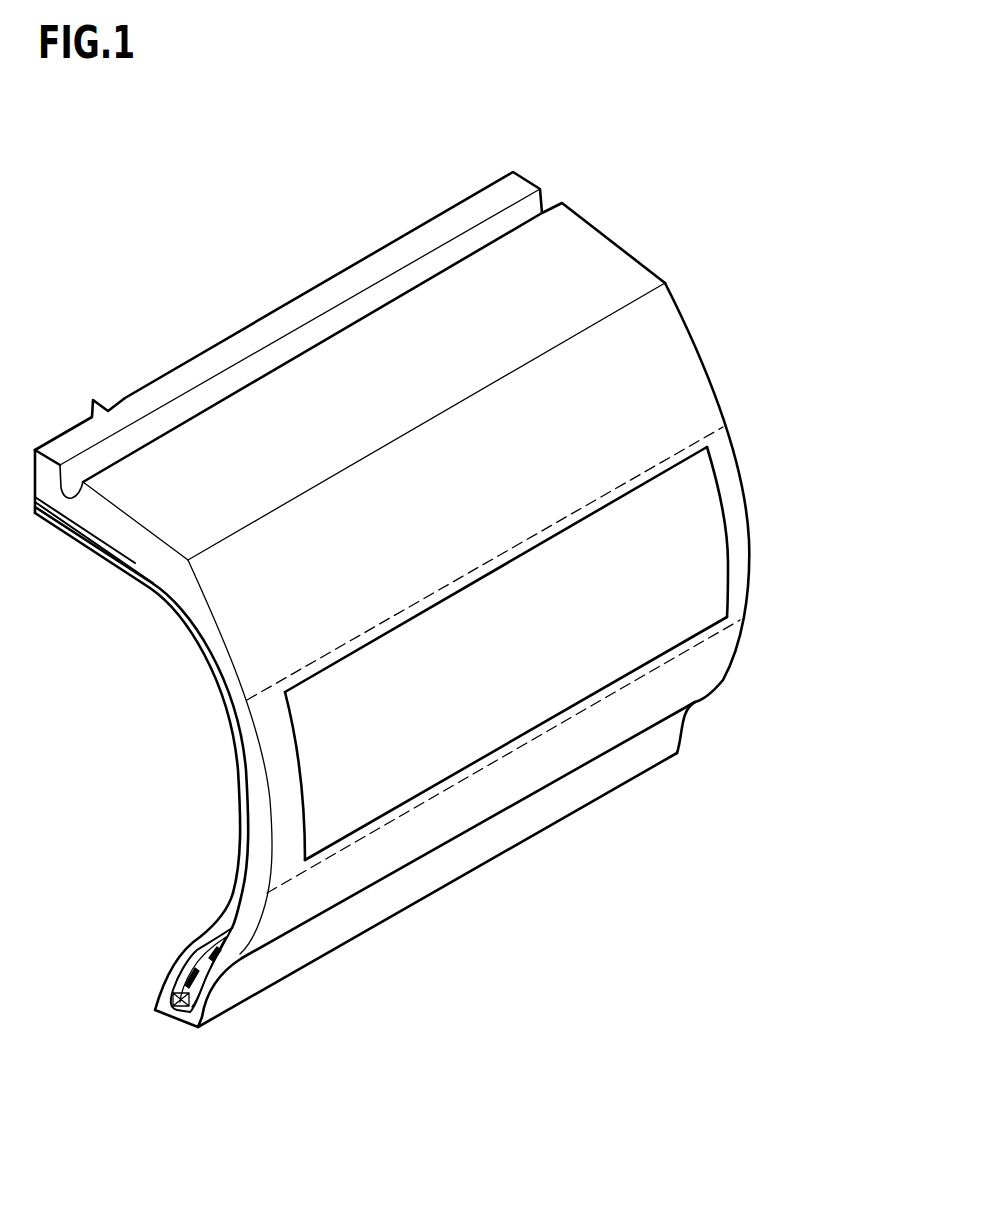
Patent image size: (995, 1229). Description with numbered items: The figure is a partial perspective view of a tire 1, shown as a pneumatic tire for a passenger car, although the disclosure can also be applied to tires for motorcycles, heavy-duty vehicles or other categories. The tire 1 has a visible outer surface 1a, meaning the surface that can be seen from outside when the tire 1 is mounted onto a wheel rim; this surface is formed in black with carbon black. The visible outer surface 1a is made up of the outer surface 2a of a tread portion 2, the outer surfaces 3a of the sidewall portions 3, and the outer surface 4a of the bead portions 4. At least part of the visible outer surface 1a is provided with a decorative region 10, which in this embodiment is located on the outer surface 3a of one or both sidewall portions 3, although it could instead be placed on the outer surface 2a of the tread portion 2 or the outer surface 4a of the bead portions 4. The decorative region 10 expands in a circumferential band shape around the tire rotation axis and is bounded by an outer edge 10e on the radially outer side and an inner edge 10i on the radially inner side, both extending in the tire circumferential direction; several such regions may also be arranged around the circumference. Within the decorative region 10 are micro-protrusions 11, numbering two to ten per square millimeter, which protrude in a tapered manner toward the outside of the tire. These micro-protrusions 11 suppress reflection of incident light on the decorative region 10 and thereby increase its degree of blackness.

The tire 1 is at (437, 185).
The visible outer surface 1a is at (295, 403).
The tread portion 2 is at (613, 213).
The outer surface of tread portion 2a is at (607, 283).
The sidewall portion 3 is at (733, 537).
The outer surface of sidewall portion 3a is at (738, 577).
The bead portion 4 is at (262, 1023).
The outer surface of bead portion 4a is at (390, 897).
The decorative region 10 is at (687, 487).
The outer edge 10e is at (333, 658).
The inner edge 10i is at (373, 823).
The micro-protrusions 11 is at (545, 655).